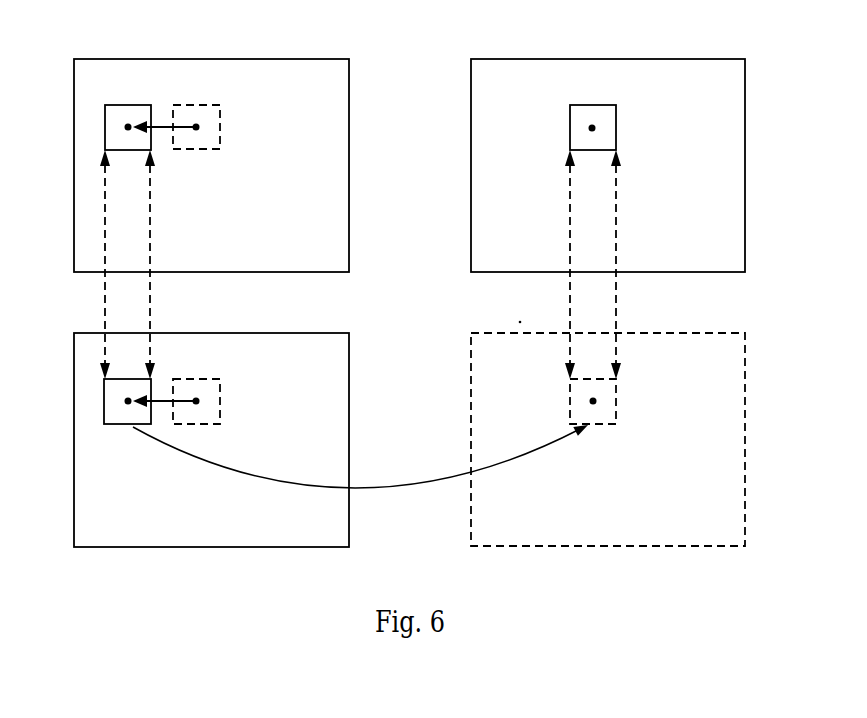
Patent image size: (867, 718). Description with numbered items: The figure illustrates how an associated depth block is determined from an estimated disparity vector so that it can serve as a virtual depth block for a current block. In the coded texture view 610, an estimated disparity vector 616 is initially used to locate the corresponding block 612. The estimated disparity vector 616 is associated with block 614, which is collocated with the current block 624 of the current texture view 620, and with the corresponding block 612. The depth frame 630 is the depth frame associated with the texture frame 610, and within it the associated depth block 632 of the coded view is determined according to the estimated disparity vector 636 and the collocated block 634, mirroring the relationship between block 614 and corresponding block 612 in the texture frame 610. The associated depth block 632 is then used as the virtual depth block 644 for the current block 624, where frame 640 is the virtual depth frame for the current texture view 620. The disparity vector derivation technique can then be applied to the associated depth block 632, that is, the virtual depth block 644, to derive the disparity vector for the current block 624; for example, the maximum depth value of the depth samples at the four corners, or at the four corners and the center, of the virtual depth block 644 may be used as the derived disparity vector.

The coded texture view 610 is at (349, 135).
The corresponding block 612 is at (118, 105).
The block collocated with current block 614 is at (203, 105).
The estimated disparity vector 616 is at (163, 127).
The current texture view 620 is at (745, 135).
The current block 624 is at (594, 105).
The depth frame 630 is at (349, 410).
The associated depth block 632 is at (104, 399).
The collocated block 634 is at (200, 378).
The estimated disparity vector 636 is at (163, 398).
The virtual depth frame 640 is at (745, 413).
The virtual depth block 644 is at (614, 390).